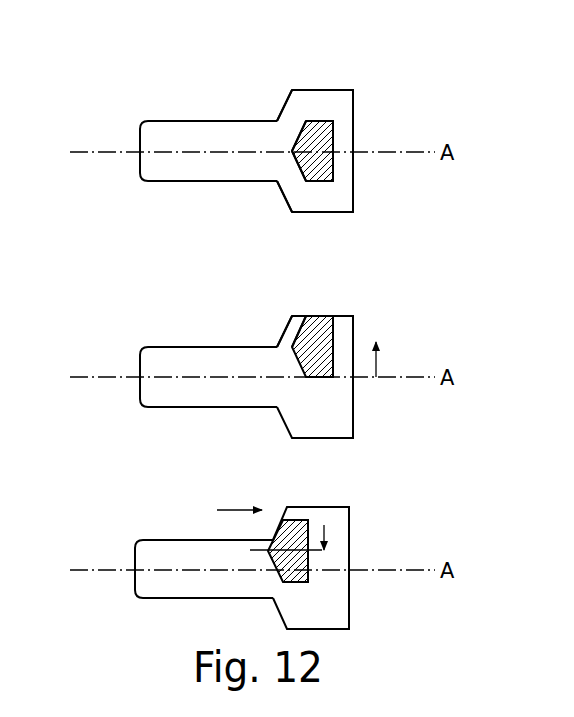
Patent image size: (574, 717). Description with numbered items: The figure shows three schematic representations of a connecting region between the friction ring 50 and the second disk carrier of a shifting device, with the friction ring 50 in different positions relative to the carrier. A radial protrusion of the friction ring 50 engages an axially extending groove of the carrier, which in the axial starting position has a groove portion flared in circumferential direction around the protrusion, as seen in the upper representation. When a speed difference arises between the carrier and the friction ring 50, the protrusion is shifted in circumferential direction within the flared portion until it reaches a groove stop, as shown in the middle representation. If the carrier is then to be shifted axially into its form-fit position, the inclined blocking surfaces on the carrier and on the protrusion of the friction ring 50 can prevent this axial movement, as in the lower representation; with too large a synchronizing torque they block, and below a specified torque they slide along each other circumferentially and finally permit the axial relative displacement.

The friction ring 50 is at (346, 138).